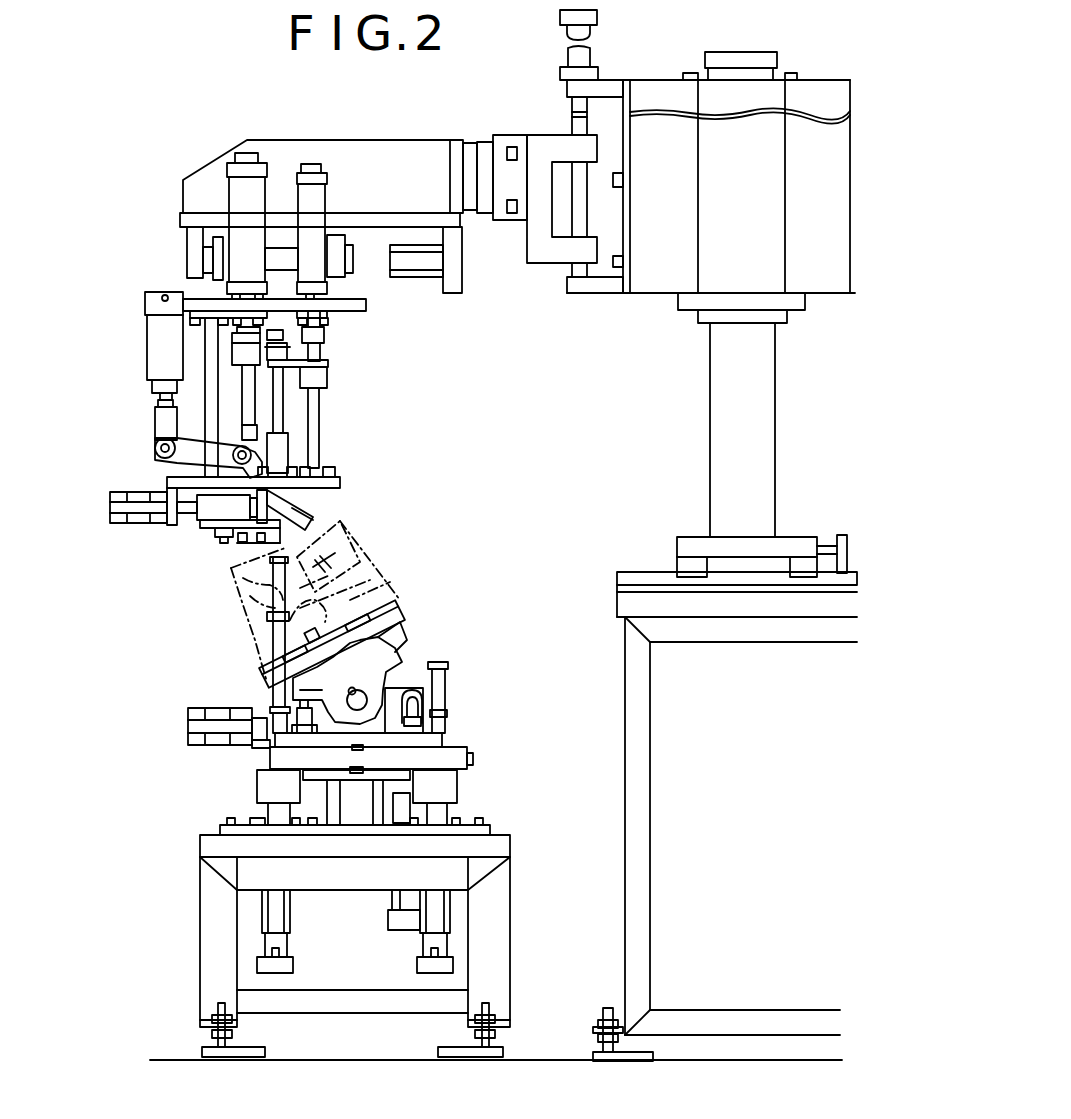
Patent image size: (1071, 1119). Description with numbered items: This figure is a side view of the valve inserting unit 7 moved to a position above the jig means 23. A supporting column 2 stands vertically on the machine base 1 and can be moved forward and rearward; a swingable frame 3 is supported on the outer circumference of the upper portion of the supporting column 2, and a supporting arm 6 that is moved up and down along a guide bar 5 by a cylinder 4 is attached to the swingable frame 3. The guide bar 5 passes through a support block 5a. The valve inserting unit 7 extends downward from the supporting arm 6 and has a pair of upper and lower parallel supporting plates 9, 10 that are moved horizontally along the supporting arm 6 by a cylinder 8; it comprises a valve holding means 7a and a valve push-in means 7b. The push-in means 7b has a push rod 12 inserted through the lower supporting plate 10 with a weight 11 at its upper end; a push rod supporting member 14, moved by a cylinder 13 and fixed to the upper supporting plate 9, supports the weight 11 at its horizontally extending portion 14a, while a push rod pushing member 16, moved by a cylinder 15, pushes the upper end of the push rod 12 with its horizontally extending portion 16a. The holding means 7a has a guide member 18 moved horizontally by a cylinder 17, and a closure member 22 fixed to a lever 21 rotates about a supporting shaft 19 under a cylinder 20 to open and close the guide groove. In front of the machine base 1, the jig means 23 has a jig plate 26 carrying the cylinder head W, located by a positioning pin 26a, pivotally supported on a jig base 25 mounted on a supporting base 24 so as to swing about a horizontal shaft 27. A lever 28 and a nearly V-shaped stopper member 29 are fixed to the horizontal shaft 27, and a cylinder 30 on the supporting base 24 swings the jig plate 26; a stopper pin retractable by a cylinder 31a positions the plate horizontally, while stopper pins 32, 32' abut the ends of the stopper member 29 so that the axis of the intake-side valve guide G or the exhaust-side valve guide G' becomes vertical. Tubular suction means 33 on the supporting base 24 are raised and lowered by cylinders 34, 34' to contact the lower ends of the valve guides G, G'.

The machine base 1 is at (625, 720).
The supporting column 2 is at (728, 408).
The swingable frame 3 is at (630, 293).
The cylinder 4 is at (590, 32).
The guide bar 5 is at (578, 270).
The support block 5a is at (538, 246).
The supporting arm 6 is at (402, 160).
The valve inserting unit 7 is at (373, 444).
The valve holding means 7a is at (205, 538).
The valve push-in means 7b is at (376, 378).
The cylinder 8 is at (420, 277).
The upper supporting plate 9 is at (355, 307).
The lower supporting plate 10 is at (340, 486).
The weight 11 is at (290, 350).
The push rod 12 is at (285, 432).
The cylinder 13 is at (318, 202).
The push rod supporting member 14 is at (318, 392).
The horizontally extending portion 14a is at (320, 378).
The cylinder 15 is at (248, 197).
The push rod pushing member 16 is at (237, 353).
The horizontally extending portion 16a is at (285, 335).
The cylinder 17 is at (135, 492).
The guide member 18 is at (240, 545).
The supporting shaft 19 is at (157, 432).
The cylinder 20 is at (160, 336).
The lever 21 is at (290, 500).
The closure member 22 is at (330, 540).
The jig means 23 is at (458, 639).
The supporting base 24 is at (215, 925).
The jig base 25 is at (455, 770).
The jig plate 26 is at (405, 615).
The positioning pin 26a is at (268, 628).
The horizontal shaft 27 is at (366, 694).
The lever 28 is at (425, 700).
The stopper member 29 is at (390, 640).
The cylinder 30 is at (400, 922).
The cylinder 31a is at (188, 722).
The stopper pin 32 is at (258, 744).
The stopper pin 32' is at (448, 711).
The tubular suction means 33 is at (268, 692).
The cylinder 34 is at (297, 938).
The cylinder 34' is at (416, 939).
The valve guide G is at (259, 615).
The valve guide G' is at (356, 560).
The cylinder head W is at (380, 606).